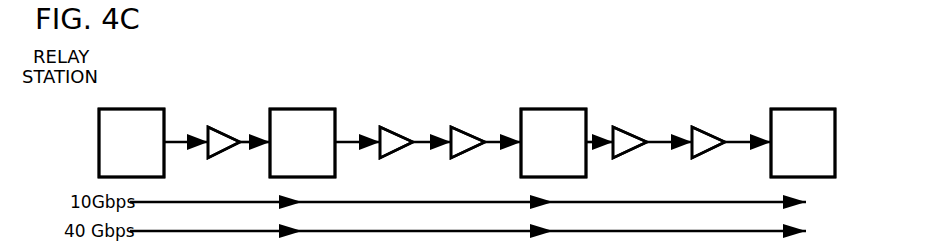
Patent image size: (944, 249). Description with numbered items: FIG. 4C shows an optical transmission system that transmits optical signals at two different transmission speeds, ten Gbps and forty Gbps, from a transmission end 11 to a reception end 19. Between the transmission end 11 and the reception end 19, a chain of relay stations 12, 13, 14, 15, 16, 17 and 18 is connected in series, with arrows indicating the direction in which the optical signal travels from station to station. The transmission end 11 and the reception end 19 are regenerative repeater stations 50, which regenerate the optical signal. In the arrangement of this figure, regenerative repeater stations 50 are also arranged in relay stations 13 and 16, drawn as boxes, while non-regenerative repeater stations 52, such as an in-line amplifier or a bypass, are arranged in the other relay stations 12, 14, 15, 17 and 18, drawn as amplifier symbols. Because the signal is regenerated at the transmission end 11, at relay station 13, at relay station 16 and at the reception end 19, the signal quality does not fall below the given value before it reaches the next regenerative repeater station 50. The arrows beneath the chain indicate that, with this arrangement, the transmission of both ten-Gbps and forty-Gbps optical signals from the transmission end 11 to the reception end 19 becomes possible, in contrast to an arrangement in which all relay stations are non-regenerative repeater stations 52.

The transmission end 11 is at (131, 116).
The relay station 12 is at (224, 107).
The relay station 13 is at (302, 116).
The relay station 14 is at (396, 107).
The relay station 15 is at (468, 107).
The relay station 16 is at (553, 116).
The relay station 17 is at (630, 107).
The relay station 18 is at (708, 107).
The reception end 19 is at (803, 116).
The regenerative repeater station 50 is at (160, 108).
The non-regenerative repeater station 52 is at (226, 135).